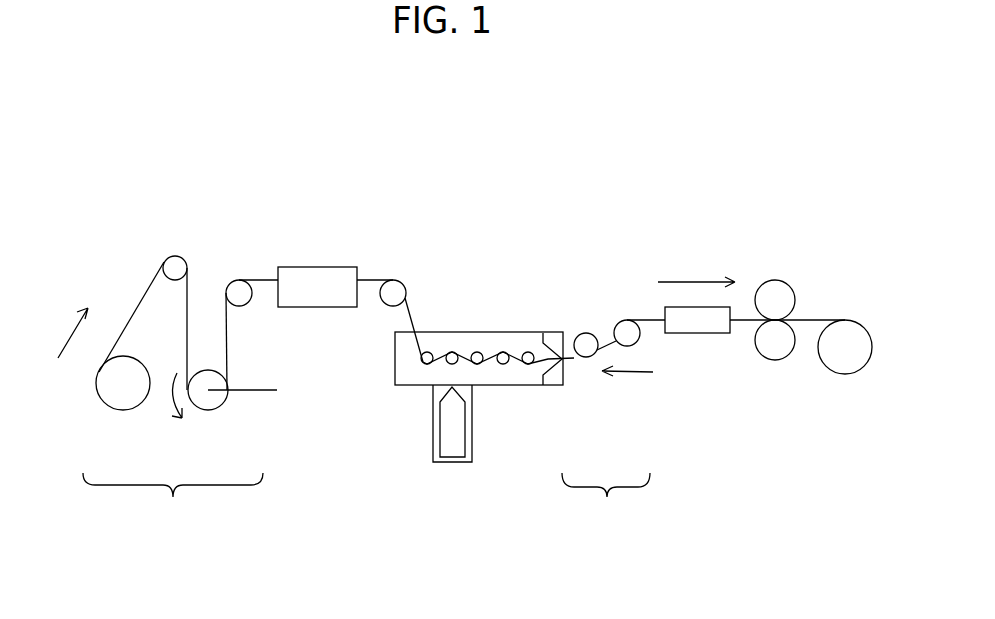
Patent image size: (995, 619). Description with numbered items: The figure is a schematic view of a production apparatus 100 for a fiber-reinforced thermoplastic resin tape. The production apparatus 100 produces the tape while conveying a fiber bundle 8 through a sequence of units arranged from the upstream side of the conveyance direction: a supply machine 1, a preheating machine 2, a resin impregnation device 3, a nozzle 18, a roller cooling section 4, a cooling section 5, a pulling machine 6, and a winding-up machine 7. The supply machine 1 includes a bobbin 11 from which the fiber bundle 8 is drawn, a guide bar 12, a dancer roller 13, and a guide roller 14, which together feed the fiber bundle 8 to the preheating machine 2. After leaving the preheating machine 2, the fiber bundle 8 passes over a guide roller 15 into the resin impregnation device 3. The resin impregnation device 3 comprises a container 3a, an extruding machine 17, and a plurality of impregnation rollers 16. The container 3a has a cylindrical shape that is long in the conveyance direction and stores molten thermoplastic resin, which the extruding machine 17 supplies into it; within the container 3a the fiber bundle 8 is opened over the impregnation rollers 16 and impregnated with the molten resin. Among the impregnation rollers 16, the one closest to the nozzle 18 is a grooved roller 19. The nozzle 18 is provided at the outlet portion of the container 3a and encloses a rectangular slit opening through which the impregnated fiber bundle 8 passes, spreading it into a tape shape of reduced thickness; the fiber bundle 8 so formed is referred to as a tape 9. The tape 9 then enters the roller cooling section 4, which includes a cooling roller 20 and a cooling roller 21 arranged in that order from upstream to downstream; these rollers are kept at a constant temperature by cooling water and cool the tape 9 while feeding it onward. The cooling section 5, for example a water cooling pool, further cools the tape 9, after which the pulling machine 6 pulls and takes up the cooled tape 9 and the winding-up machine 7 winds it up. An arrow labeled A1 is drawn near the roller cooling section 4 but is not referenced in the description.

The production apparatus 100 is at (693, 200).
The supply machine 1 is at (173, 500).
The preheating machine 2 is at (308, 308).
The resin impregnation device 3 is at (492, 420).
The container 3a is at (395, 362).
The roller cooling section 4 is at (606, 503).
The cooling section 5 is at (705, 333).
The pulling machine 6 is at (775, 360).
The winding-up machine 7 is at (845, 374).
The fiber bundle 8 is at (128, 320).
The tape 9 is at (650, 320).
The bobbin 11 is at (118, 410).
The guide bar 12 is at (176, 254).
The dancer roller 13 is at (215, 409).
The guide roller 14 is at (238, 280).
The guide roller 15 is at (403, 281).
The impregnation rollers 16 is at (527, 351).
The extruding machine 17 is at (432, 420).
The nozzle 18 is at (548, 386).
The grooved roller 19 is at (532, 352).
The cooling roller 20 is at (592, 333).
The cooling roller 21 is at (623, 321).
The transport direction A1 is at (625, 373).